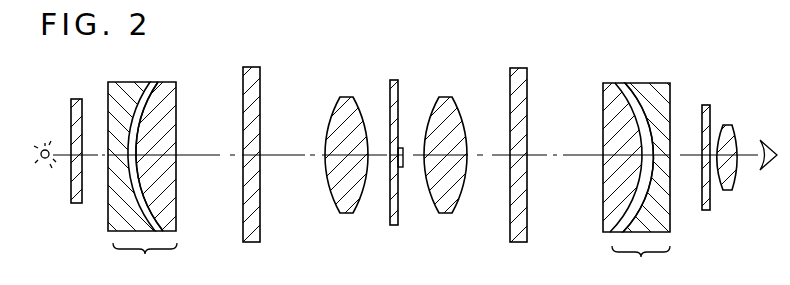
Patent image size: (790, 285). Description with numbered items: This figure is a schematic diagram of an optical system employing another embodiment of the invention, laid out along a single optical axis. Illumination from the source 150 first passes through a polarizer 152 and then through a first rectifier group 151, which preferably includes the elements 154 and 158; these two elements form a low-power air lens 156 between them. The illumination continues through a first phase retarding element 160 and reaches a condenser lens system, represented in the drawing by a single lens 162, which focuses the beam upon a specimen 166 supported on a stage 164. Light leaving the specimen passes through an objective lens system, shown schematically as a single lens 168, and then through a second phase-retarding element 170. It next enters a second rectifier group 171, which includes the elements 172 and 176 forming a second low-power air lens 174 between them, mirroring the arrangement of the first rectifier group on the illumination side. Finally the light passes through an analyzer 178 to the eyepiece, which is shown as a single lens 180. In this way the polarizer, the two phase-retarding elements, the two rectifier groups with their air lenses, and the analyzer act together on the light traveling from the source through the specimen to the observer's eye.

The source 150 is at (40, 163).
The first rectifier group 151 is at (145, 260).
The polarizer 152 is at (70, 199).
The element 154 is at (133, 87).
The low-power air lens 156 is at (155, 84).
The element 158 is at (176, 103).
The first phase retarding element 160 is at (260, 77).
The condenser lens system 162 is at (337, 108).
The stage 164 is at (388, 83).
The specimen 166 is at (402, 167).
The objective lens system 168 is at (458, 108).
The second phase-retarding element 170 is at (523, 88).
The second rectifier group 171 is at (641, 264).
The element 172 is at (612, 85).
The second low-power air lens 174 is at (620, 85).
The element 176 is at (670, 92).
The analyzer 178 is at (708, 108).
The eyepiece 180 is at (733, 135).